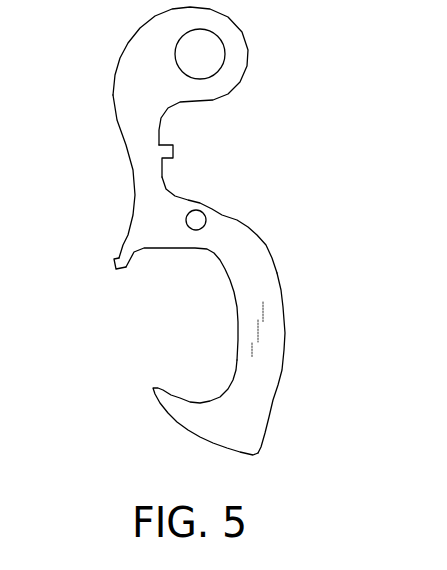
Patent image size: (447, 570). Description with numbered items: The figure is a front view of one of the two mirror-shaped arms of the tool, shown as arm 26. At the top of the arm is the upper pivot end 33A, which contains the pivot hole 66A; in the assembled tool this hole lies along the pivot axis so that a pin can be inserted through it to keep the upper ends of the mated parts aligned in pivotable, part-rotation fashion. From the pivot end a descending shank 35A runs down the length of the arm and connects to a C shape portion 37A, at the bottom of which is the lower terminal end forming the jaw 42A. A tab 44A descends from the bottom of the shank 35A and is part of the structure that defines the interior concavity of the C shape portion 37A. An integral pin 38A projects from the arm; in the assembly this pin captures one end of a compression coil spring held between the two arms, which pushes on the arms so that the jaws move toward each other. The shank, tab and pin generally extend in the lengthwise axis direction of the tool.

The arm 26 is at (92, 193).
The upper pivot end 33A is at (150, 38).
The pivot hole 66A is at (222, 44).
The shank 35A is at (142, 153).
The integral pin 38A is at (177, 153).
The tab 44A is at (117, 265).
The C shape portion 37A is at (277, 312).
The jaw 42A is at (193, 400).